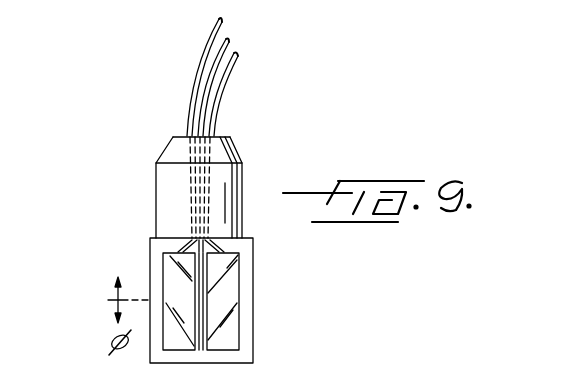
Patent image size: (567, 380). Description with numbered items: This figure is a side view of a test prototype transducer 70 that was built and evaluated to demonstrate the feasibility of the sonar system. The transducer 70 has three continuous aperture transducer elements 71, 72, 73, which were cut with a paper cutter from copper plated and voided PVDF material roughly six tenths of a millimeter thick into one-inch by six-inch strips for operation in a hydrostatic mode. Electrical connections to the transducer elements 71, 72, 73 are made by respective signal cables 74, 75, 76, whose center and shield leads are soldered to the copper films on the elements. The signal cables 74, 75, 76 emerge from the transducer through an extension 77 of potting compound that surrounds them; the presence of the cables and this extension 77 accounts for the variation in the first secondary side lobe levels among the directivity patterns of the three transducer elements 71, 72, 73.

The test prototype transducer 70 is at (126, 194).
The transducer element 71 is at (168, 283).
The transducer element 72 is at (204, 274).
The transducer element 73 is at (229, 294).
The signal cable 74 is at (192, 100).
The signal cable 75 is at (207, 63).
The signal cable 76 is at (223, 90).
The extension of potting compound 77 is at (165, 210).